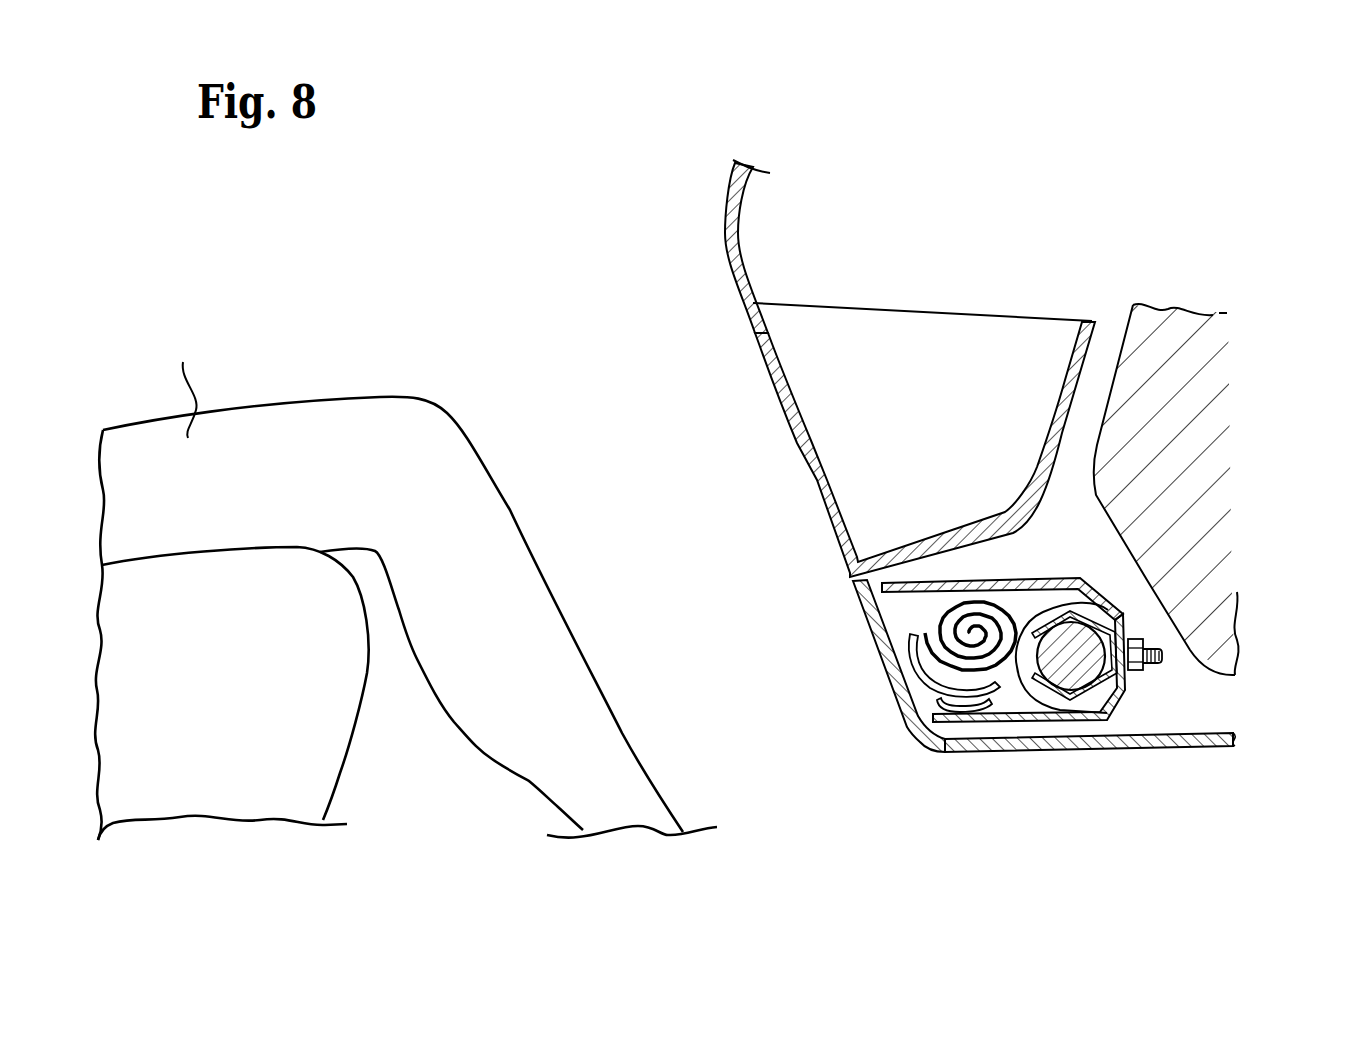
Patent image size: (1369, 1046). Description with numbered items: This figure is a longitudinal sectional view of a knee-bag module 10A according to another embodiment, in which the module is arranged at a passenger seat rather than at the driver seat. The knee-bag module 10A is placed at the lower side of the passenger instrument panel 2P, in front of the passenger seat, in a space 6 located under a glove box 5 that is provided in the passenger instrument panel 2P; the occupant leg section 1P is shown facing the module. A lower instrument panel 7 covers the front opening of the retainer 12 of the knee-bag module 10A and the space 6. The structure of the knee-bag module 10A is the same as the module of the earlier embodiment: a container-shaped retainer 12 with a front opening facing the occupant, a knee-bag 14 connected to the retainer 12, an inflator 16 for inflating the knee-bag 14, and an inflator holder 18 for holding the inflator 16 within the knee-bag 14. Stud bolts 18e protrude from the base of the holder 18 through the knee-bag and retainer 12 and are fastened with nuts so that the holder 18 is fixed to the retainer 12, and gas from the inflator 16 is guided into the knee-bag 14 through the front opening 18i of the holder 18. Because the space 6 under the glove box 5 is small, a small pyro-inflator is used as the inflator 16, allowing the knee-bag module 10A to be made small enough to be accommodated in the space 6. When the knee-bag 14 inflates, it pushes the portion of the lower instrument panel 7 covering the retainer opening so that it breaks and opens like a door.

The occupant leg section 1P is at (193, 783).
The passenger instrument panel 2P is at (725, 212).
The glove box 5 is at (776, 387).
The space 6 is at (1065, 551).
The lower instrument panel 7 is at (877, 620).
The knee-bag module 10A is at (1107, 590).
The retainer 12 is at (1070, 733).
The knee-bag 14 is at (928, 617).
The inflator 16 is at (1043, 660).
The inflator holder 18 is at (1057, 690).
The stud bolts 18e is at (1162, 655).
The front opening 18i is at (1152, 673).